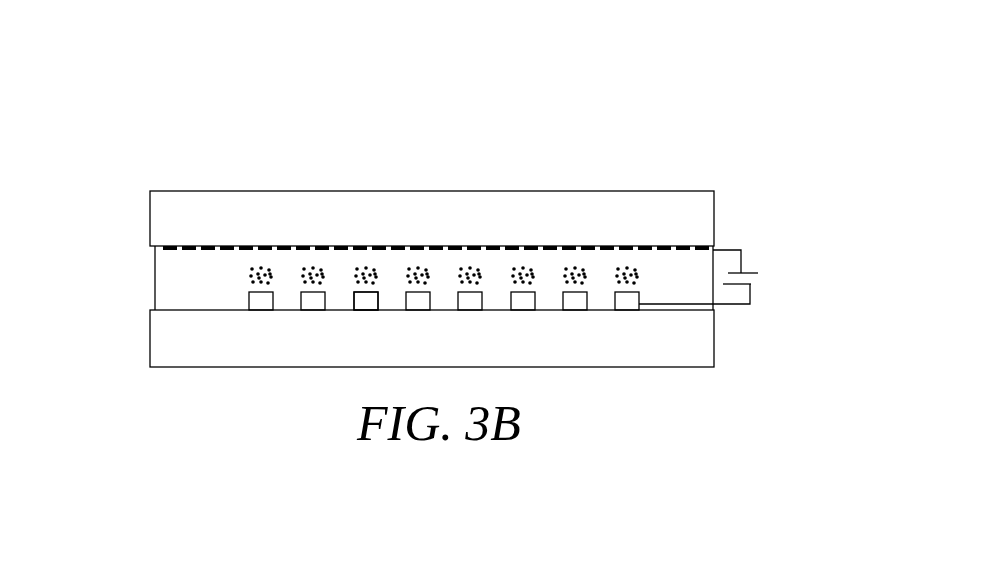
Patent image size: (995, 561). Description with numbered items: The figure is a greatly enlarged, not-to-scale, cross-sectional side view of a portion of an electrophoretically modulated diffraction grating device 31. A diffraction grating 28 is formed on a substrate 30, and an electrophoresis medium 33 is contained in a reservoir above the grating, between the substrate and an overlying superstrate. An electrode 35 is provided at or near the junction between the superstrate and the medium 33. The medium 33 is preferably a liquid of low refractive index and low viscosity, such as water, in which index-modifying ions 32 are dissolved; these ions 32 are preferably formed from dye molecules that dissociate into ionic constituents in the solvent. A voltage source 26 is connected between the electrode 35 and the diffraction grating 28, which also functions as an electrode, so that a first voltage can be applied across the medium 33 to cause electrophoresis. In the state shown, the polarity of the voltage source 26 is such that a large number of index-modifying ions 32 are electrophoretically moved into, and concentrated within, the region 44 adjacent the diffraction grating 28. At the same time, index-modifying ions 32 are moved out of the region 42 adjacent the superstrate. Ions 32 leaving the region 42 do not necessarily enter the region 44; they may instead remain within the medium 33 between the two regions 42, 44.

The voltage source 26 is at (762, 284).
The diffraction grating 28 is at (623, 300).
The substrate 30 is at (150, 337).
The electrophoretically modulated diffraction grating device 31 is at (330, 158).
The index-modifying ions 32 is at (268, 272).
The electrophoresis medium 33 is at (603, 265).
The electrode 35 is at (318, 247).
The region adjacent superstrate 42 is at (493, 259).
The region adjacent diffraction grating 44 is at (349, 291).